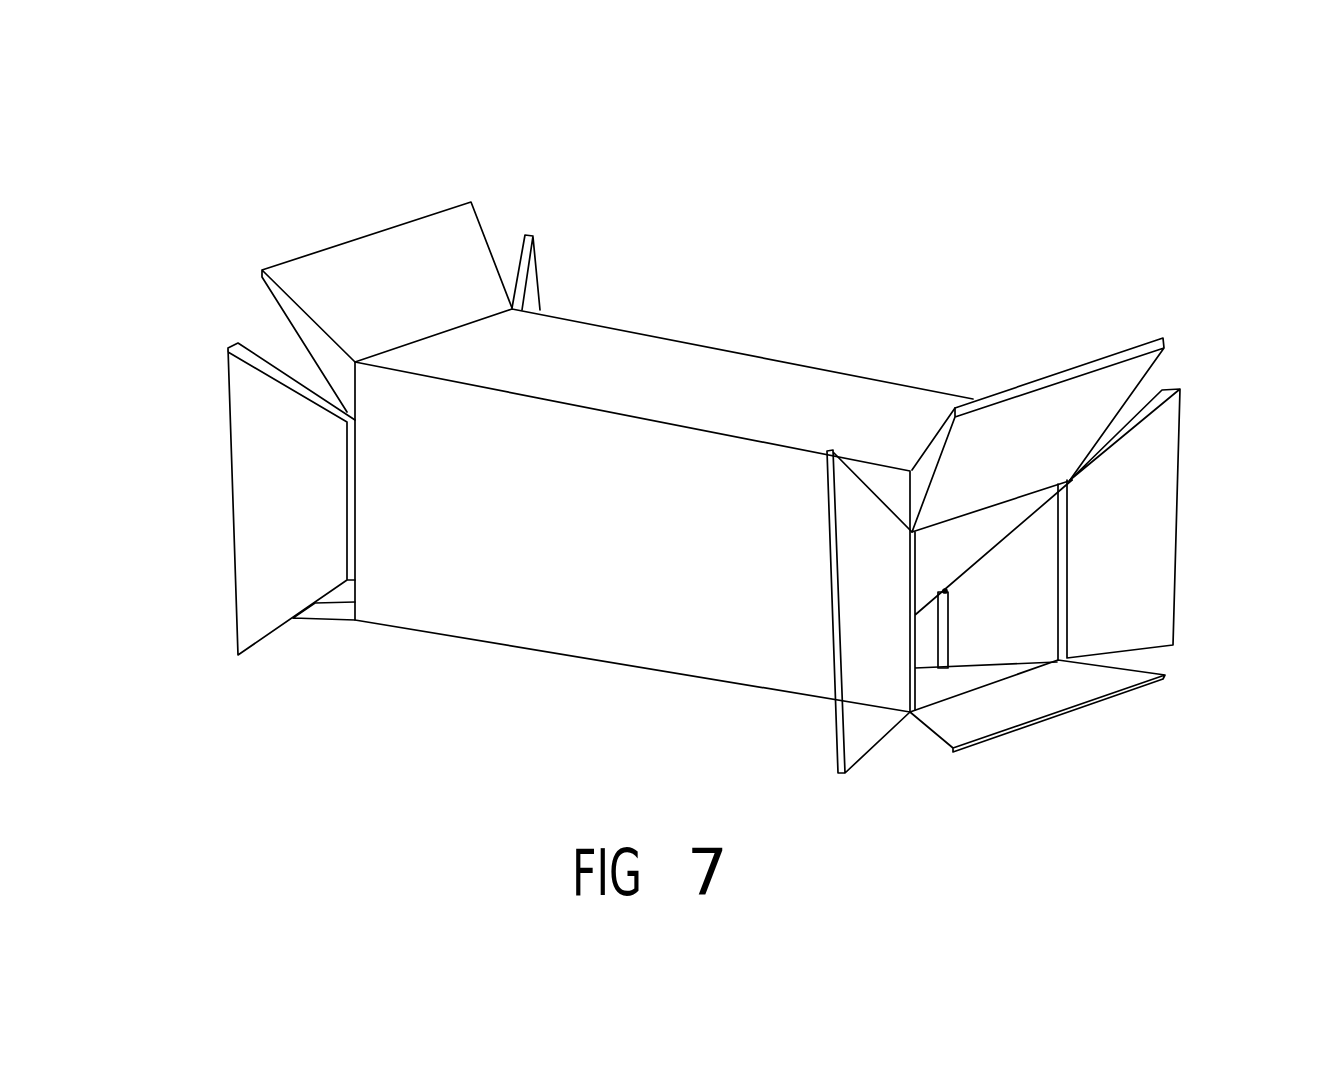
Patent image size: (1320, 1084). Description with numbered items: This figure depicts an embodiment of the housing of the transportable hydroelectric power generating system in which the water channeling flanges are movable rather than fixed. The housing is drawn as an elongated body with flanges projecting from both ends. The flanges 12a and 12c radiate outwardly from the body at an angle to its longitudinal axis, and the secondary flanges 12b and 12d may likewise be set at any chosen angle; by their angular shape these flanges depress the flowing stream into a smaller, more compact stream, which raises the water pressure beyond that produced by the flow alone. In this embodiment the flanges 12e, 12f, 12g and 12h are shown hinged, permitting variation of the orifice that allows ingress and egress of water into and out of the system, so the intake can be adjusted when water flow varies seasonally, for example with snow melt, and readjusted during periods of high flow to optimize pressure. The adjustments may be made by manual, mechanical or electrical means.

The flange 12a is at (383, 247).
The secondary flange 12b is at (328, 607).
The flange 12c is at (1085, 390).
The secondary flange 12d is at (1082, 685).
The hinged flange 12e is at (533, 282).
The hinged flange 12f is at (243, 475).
The hinged flange 12g is at (1143, 473).
The hinged flange 12h is at (862, 713).